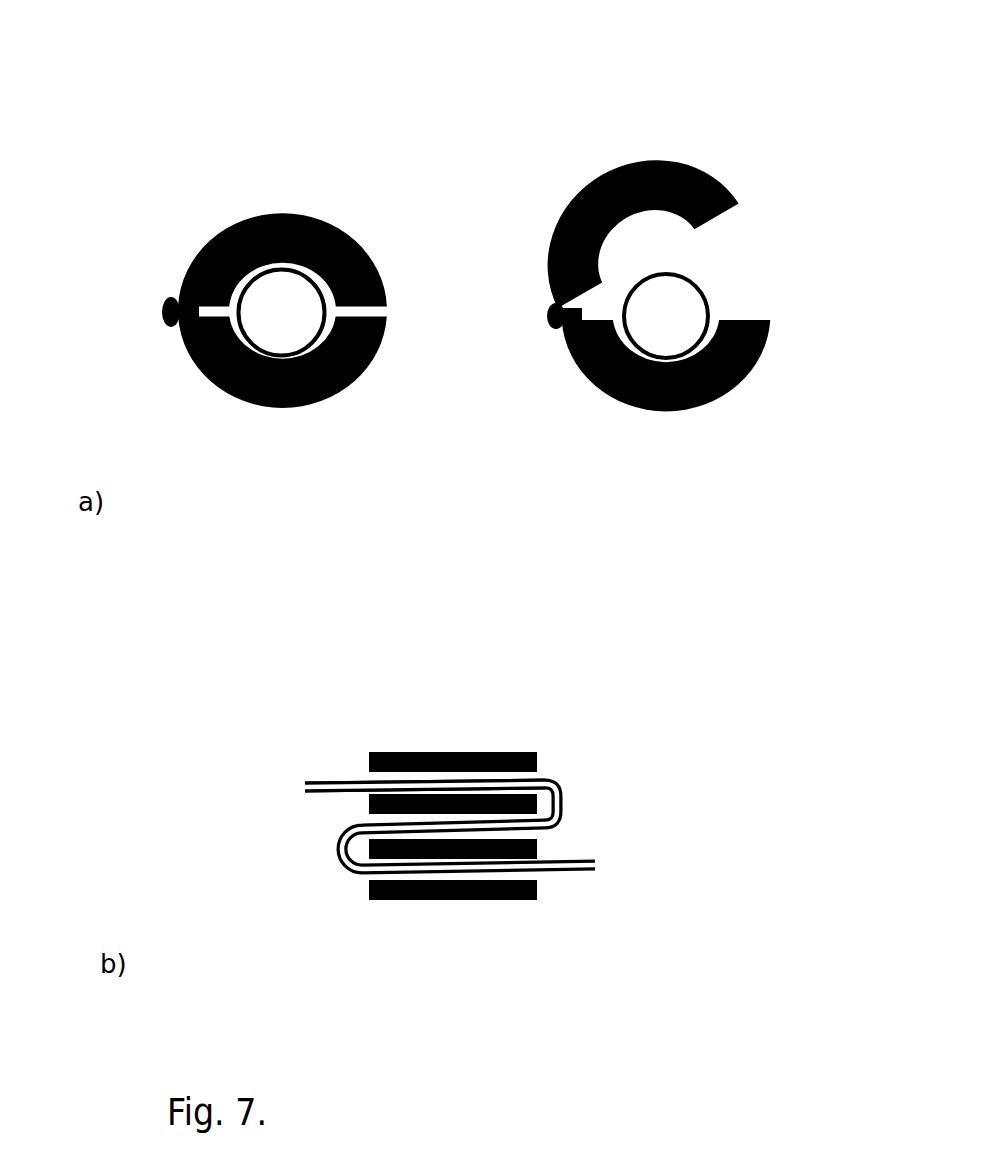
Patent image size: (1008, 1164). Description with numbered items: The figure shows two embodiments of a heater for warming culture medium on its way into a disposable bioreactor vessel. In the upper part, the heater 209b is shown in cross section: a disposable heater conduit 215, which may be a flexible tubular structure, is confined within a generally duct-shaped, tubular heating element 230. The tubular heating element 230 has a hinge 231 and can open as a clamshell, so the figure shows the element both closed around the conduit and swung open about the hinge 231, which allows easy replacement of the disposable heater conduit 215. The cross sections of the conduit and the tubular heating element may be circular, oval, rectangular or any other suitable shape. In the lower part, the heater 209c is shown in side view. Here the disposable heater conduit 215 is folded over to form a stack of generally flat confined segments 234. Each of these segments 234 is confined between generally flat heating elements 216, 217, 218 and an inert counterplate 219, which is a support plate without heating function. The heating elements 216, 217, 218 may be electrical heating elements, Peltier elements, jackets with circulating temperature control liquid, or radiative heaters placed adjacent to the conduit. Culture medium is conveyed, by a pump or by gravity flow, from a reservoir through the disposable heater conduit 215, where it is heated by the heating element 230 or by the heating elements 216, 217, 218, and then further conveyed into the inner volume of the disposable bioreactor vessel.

The heater 209b is at (402, 128).
The tubular heating element 230 is at (275, 212).
The disposable heater conduit 215 is at (313, 283).
The hinge 231 is at (168, 322).
The heater 209c is at (463, 664).
The heating element 216 is at (419, 753).
The heating element 217 is at (370, 805).
The heating element 218 is at (538, 847).
The inert counterplate 219 is at (400, 899).
The segments 234 is at (483, 868).